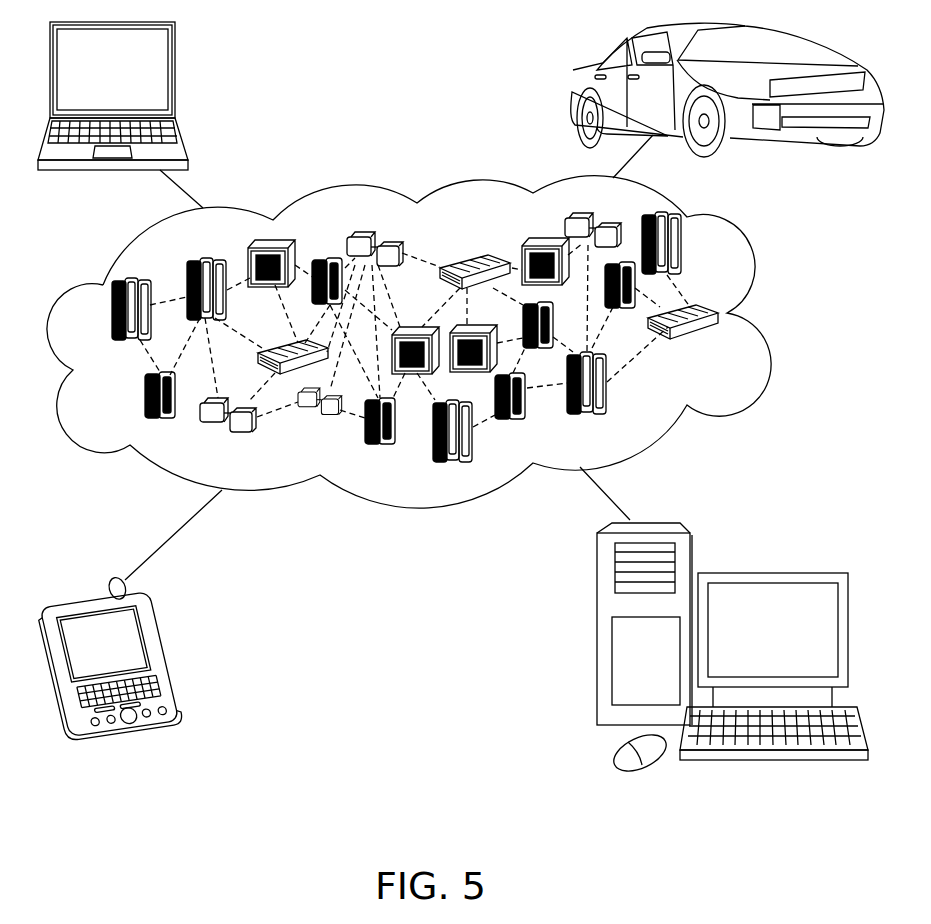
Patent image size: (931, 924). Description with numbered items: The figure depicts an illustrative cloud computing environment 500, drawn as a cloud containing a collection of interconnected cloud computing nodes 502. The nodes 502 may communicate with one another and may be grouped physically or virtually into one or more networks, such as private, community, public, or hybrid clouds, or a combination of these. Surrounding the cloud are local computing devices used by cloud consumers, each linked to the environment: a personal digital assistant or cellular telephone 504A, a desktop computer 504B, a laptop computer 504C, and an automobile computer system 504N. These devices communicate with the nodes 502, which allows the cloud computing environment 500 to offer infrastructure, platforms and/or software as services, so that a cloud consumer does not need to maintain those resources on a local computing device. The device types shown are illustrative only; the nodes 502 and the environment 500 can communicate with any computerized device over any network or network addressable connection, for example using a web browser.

The cloud computing environment 500 is at (748, 303).
The cloud computing nodes 502 is at (718, 343).
The personal digital assistant (PDA) or cellular telephone 504A is at (156, 628).
The desktop computer 504B is at (760, 573).
The laptop computer 504C is at (176, 55).
The automobile computer system 504N is at (572, 95).